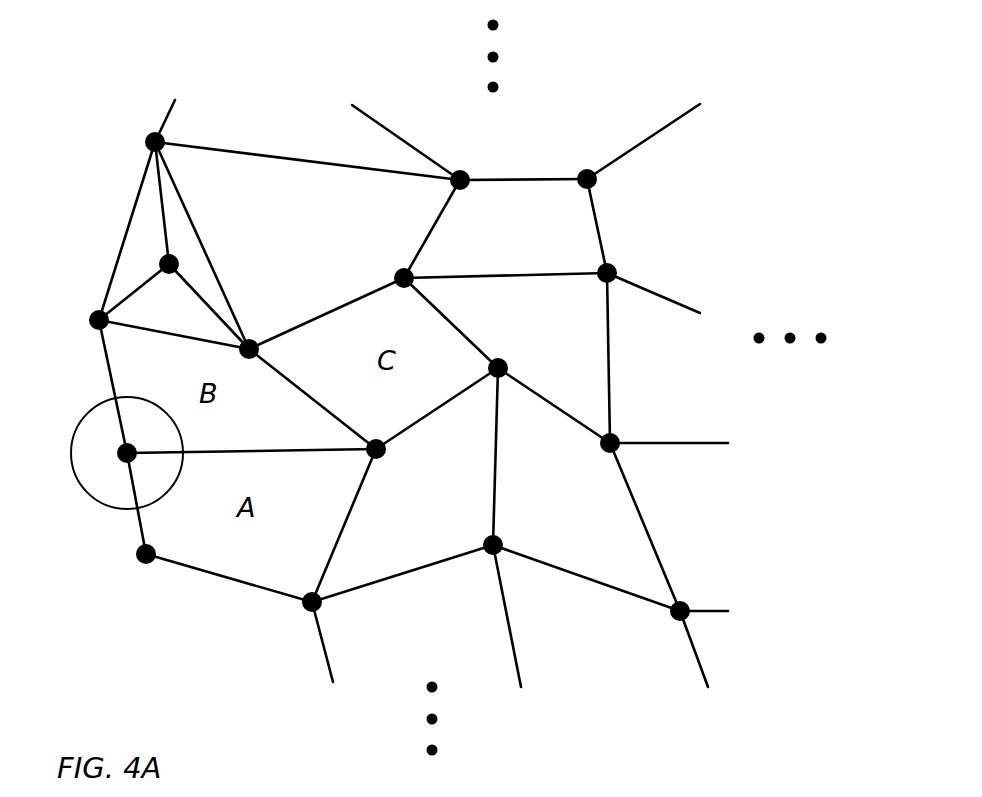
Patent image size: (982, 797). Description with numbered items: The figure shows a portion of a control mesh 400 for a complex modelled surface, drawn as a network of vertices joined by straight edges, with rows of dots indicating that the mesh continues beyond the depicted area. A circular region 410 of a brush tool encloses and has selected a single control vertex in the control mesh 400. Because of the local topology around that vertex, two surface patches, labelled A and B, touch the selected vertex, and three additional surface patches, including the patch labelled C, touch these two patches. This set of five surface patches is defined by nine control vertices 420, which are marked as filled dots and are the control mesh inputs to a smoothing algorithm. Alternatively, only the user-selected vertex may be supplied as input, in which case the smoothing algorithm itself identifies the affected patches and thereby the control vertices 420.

The control mesh 400 is at (768, 112).
The region of a brush tool 410 is at (82, 417).
The control vertices 420 is at (162, 257).